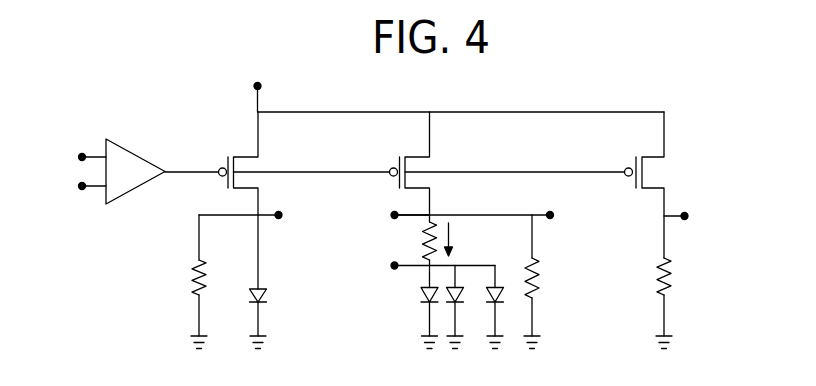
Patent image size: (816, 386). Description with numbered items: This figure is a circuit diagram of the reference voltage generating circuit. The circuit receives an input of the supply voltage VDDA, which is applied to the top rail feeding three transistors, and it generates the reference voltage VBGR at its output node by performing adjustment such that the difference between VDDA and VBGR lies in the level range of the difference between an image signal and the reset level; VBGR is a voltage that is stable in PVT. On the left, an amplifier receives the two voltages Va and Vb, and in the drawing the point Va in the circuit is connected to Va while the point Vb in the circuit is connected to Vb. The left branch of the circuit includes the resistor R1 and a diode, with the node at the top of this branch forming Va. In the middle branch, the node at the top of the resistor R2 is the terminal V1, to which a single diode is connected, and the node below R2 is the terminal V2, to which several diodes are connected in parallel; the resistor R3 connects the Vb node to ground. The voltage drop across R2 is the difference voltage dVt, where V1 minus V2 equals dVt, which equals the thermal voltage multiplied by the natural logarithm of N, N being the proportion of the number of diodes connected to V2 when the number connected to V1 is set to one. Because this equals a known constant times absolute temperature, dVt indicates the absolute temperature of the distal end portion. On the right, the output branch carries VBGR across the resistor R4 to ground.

The supply voltage VDDA is at (446, 83).
The voltage Va is at (179, 182).
The voltage Vb is at (314, 200).
The voltage V1 is at (396, 215).
The voltage V2 is at (429, 265).
The resistor R1 is at (184, 282).
The resistor R2 is at (414, 255).
The resistor R3 is at (547, 282).
The resistor R4 is at (681, 303).
The difference voltage dVt is at (468, 240).
The reference voltage VBGR is at (710, 221).